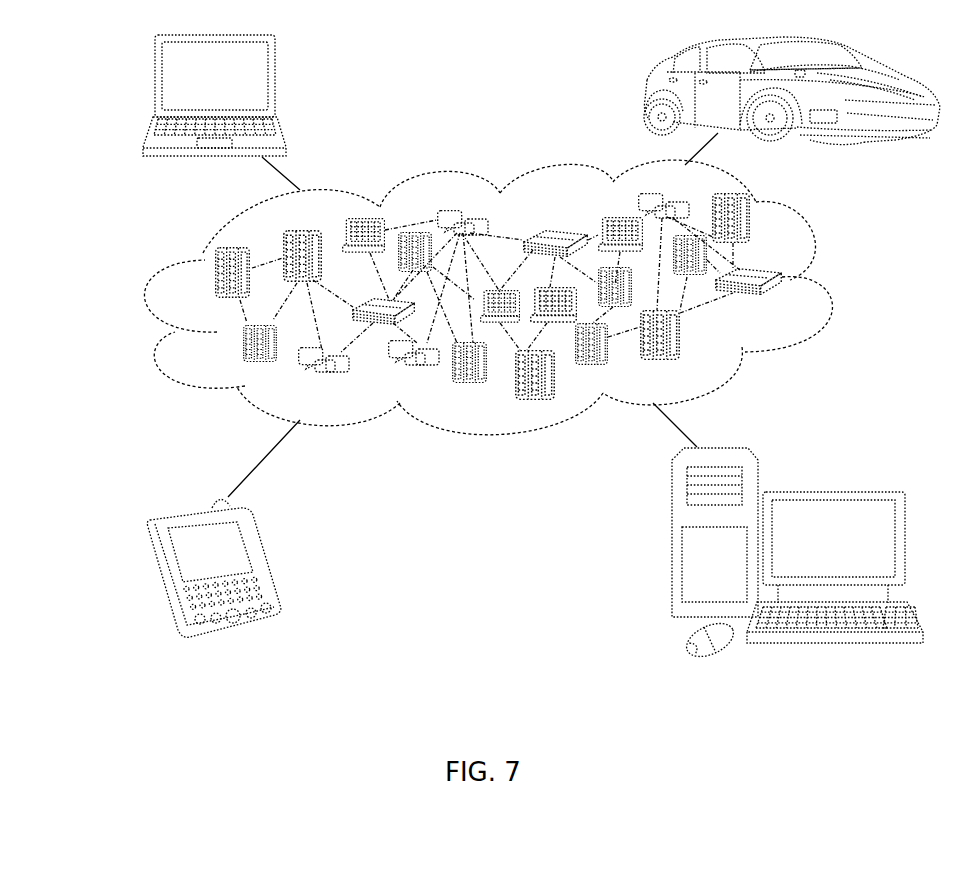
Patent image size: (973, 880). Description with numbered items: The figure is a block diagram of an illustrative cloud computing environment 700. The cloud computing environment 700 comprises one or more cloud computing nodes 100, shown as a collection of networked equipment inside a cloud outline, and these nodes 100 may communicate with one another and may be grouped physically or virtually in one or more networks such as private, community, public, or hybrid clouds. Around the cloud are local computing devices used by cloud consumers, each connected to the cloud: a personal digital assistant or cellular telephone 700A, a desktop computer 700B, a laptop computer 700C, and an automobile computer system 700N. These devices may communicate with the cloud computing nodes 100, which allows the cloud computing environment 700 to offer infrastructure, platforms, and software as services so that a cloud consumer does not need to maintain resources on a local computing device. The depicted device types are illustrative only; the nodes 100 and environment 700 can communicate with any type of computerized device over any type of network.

The cloud computing environment 700 is at (834, 284).
The cloud computing nodes 100 is at (790, 306).
The personal digital assistant or cellular telephone 700A is at (264, 558).
The desktop computer 700B is at (832, 492).
The laptop computer 700C is at (274, 80).
The automobile computer system 700N is at (645, 97).